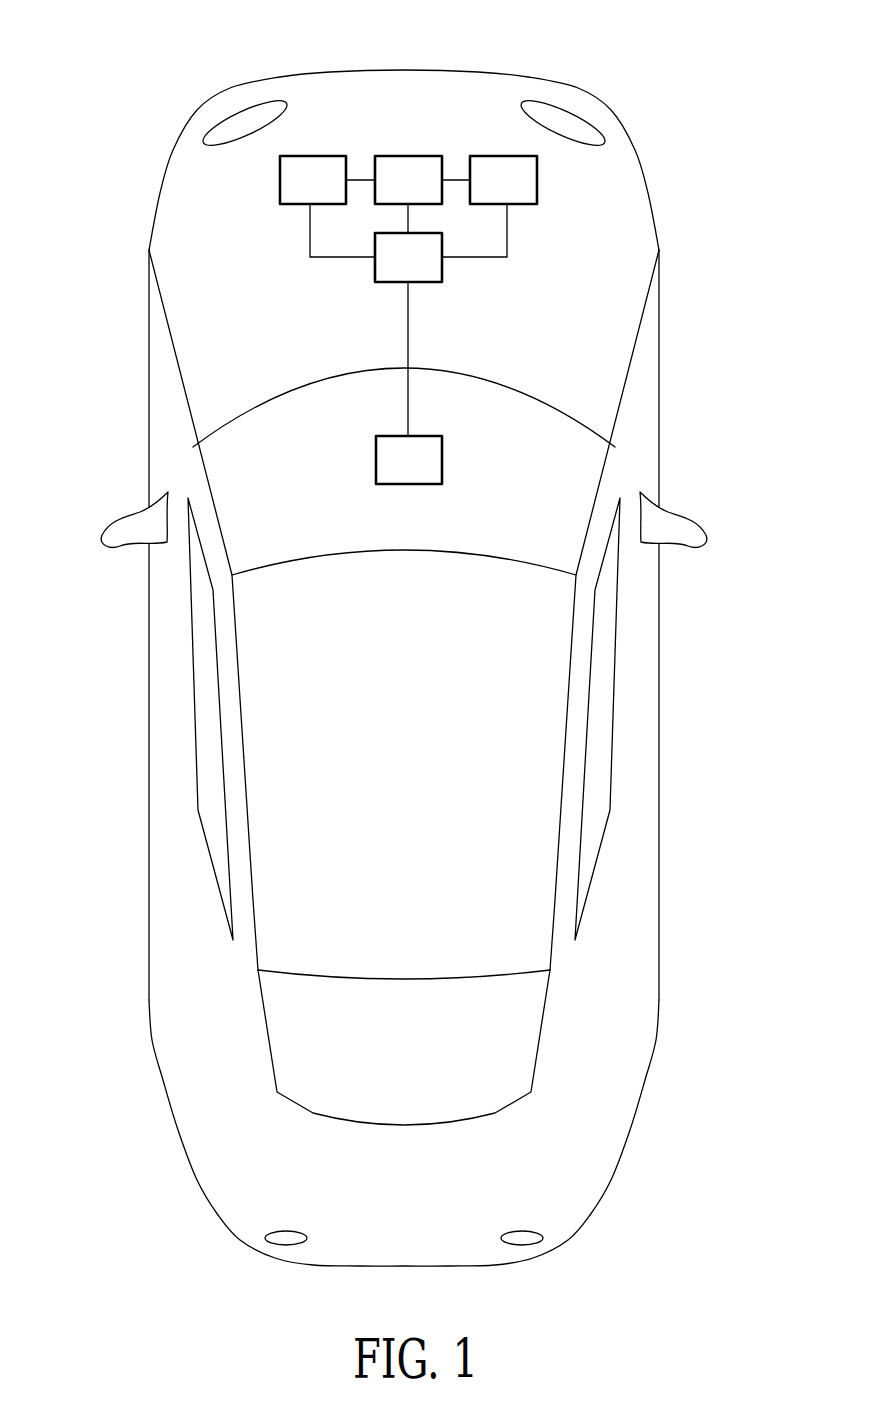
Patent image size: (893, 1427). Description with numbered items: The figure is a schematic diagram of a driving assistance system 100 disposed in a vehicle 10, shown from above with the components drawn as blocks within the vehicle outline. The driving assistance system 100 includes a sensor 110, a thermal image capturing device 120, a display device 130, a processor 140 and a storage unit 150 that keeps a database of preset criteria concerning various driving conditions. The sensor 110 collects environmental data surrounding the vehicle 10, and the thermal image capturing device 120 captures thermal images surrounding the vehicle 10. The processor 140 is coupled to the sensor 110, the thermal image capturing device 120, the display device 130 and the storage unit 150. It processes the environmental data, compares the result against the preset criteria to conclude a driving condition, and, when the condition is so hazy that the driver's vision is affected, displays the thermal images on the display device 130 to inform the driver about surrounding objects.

The vehicle 10 is at (142, 664).
The driving assistance system 100 is at (513, 408).
The sensor 110 is at (280, 181).
The thermal image capturing device 120 is at (537, 181).
The display device 130 is at (442, 467).
The processor 140 is at (442, 266).
The storage unit 150 is at (405, 156).